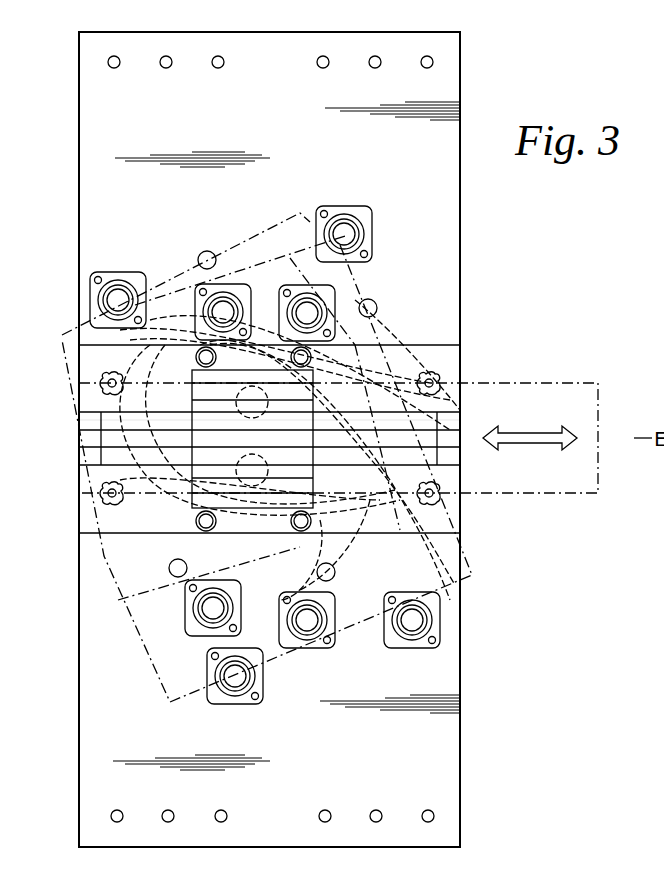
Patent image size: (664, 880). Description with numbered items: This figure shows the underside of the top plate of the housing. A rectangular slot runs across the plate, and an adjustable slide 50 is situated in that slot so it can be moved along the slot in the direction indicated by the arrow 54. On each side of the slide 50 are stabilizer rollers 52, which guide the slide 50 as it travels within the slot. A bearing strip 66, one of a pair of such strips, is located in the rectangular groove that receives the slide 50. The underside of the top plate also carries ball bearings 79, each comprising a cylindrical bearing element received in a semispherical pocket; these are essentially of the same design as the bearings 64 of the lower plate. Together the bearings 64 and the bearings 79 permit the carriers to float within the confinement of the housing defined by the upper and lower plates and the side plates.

The adjustable slide 50 is at (582, 490).
The stabilizer rollers 52 is at (352, 345).
The arrow 54 is at (533, 448).
The ball bearings 64 is at (425, 445).
The bearing strip 66 is at (440, 445).
The ball bearings 79 is at (118, 300).